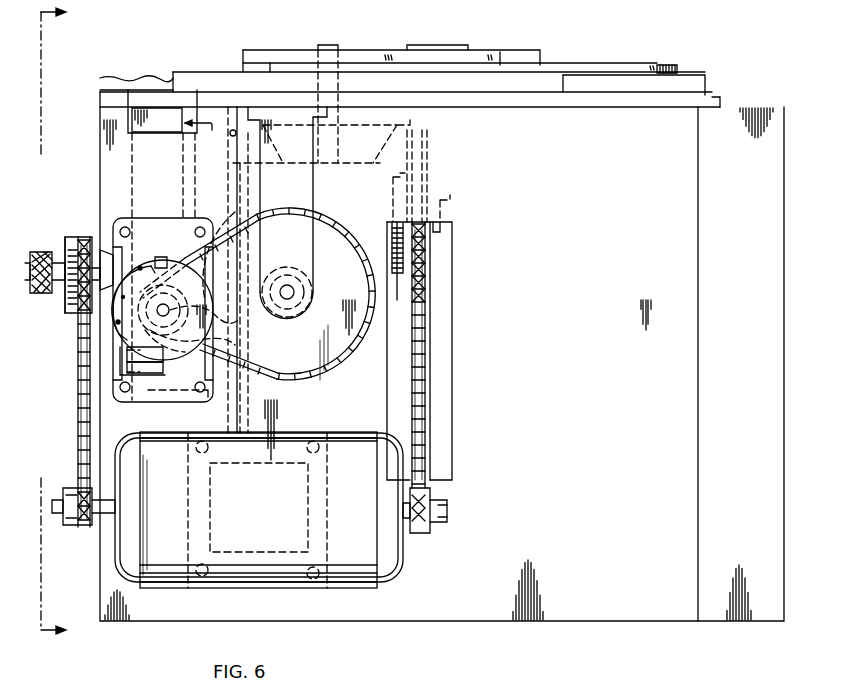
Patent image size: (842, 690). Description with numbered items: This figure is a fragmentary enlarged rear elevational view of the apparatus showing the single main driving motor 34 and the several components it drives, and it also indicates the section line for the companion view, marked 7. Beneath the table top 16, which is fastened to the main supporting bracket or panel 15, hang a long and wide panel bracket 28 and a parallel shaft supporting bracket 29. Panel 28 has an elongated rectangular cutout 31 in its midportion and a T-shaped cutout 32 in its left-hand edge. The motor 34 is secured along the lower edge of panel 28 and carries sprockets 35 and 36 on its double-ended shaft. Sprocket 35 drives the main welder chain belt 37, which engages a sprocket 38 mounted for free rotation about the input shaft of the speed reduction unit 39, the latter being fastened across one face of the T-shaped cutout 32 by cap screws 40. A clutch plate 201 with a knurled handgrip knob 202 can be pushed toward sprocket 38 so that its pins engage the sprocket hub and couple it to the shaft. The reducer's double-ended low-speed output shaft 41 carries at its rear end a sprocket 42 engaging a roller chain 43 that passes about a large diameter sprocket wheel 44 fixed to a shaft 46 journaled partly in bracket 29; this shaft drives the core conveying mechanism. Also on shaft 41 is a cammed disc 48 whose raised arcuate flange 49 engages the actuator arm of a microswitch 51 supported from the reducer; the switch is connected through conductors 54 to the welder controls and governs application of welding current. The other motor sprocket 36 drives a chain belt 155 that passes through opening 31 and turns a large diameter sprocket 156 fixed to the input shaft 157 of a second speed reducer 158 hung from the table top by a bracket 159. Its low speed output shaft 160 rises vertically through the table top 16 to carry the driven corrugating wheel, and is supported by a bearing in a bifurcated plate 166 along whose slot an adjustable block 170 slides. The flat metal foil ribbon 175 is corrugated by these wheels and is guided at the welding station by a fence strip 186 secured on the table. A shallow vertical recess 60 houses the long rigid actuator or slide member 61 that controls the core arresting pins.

The section line 7- 7 is at (61, 322).
The main supporting bracket or panel 15 is at (240, 408).
The table top 16 is at (563, 92).
The panel bracket 28 is at (442, 356).
The shaft supporting bracket 29 is at (300, 188).
The elongated rectangular cutout 31 is at (452, 430).
The T-shaped cutout 32 is at (100, 345).
The main driving motor 34 is at (345, 582).
The sprocket 35 is at (70, 525).
The sprocket 36 is at (432, 530).
The chain belt 37 is at (77, 455).
The sprocket 38 is at (65, 315).
The speed reduction unit 39 is at (125, 228).
The cap screws 40 is at (200, 228).
The low-speed output shaft 41 is at (220, 316).
The sprocket 42 is at (222, 342).
The roller chain 43 is at (298, 388).
The large diameter sprocket wheel 44 is at (352, 352).
The shaft 46 is at (287, 300).
The cammed disc 48 is at (173, 260).
The raised arcuate flange 49 is at (147, 250).
The microswitch 51 is at (162, 393).
The conductors 54 is at (124, 393).
The vertical recess 60 is at (193, 157).
The actuator or slide member 61 is at (212, 130).
The chain belt 155 is at (425, 325).
The large diameter sprocket 156 is at (430, 266).
The input shaft 157 is at (450, 212).
The speed reducer 158 is at (387, 162).
The bracket 159 is at (410, 130).
The low speed output shaft 160 is at (336, 48).
The bifurcated plate 166 is at (488, 50).
The block 170 is at (418, 40).
The flat metal foil ribbon 175 is at (658, 66).
The fence strip 186 is at (685, 80).
The clutch plate 201 is at (62, 250).
The knurled handgrip knob 202 is at (37, 250).